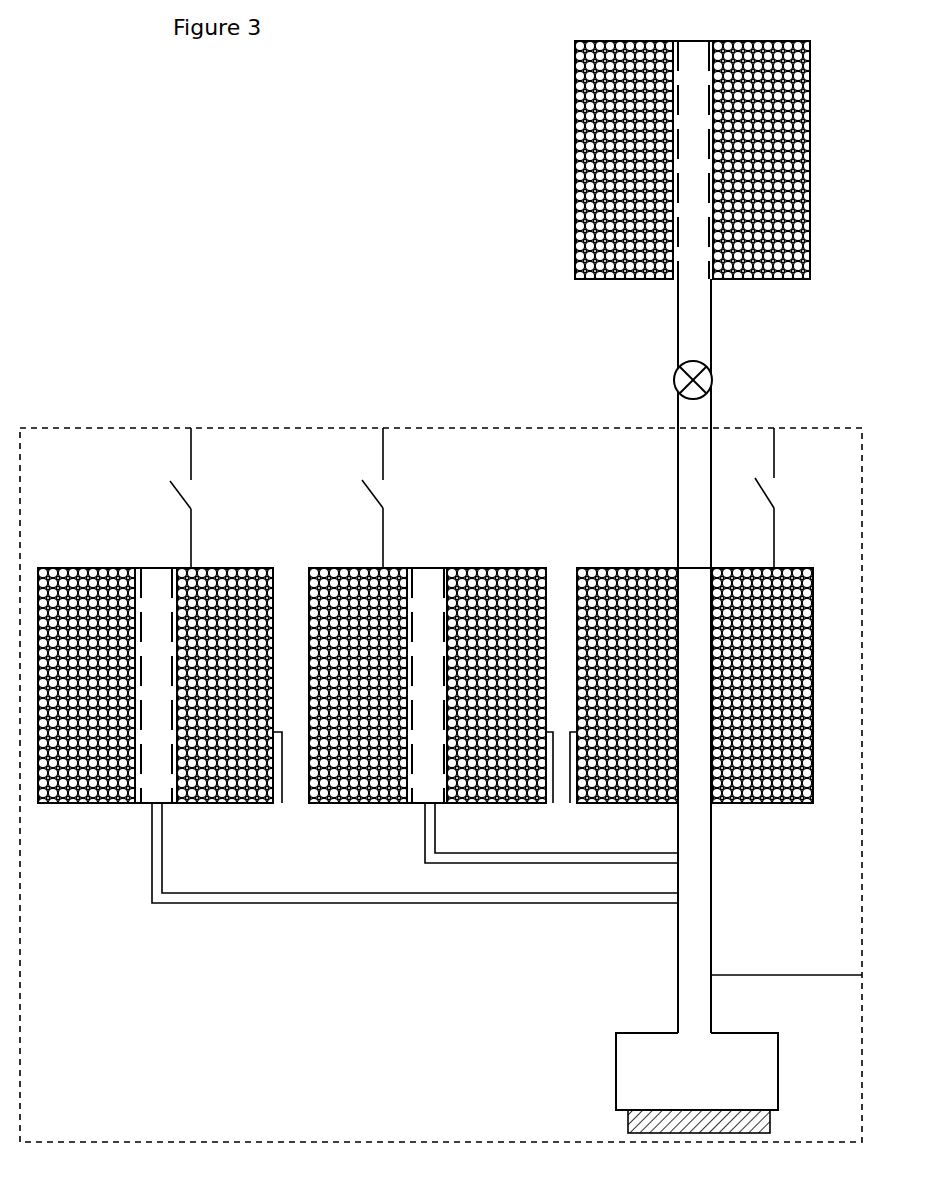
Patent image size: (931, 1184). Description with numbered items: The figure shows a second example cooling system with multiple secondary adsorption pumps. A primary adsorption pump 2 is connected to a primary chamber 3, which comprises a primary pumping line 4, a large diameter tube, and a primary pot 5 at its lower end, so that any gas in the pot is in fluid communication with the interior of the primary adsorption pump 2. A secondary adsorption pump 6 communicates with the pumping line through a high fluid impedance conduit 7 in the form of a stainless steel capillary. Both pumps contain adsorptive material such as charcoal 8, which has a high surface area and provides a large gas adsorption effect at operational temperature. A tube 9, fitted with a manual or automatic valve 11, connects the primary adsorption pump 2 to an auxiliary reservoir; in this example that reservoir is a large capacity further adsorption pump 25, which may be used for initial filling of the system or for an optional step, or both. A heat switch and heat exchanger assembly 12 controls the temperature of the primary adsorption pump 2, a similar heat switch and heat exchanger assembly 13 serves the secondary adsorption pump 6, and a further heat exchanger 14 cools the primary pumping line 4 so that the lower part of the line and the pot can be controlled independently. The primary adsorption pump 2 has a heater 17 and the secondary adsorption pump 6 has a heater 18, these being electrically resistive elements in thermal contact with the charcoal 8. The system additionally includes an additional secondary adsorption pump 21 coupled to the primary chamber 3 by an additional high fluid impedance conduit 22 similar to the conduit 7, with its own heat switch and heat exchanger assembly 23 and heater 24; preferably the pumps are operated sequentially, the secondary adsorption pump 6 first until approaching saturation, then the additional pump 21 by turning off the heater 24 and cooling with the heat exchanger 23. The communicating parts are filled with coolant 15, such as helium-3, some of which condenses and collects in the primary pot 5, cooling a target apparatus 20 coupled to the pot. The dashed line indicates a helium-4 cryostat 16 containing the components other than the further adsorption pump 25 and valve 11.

The primary adsorption pump 2 is at (586, 561).
The primary chamber 3 is at (676, 1015).
The primary pumping line 4 is at (676, 958).
The primary pot 5 is at (614, 1078).
The secondary adsorption pump 6 is at (404, 562).
The high fluid impedance conduit 7 is at (423, 849).
The charcoal 8 is at (488, 576).
The tube 9 is at (713, 411).
The valve 11 is at (673, 380).
The heat switch and heat exchanger assembly 12 is at (789, 500).
The heat switch and heat exchanger assembly 13 is at (352, 480).
The heat exchanger 14 is at (761, 972).
The coolant 15 is at (731, 1078).
The cryostat 16 is at (22, 1025).
The heater 17 is at (574, 806).
The heater 18 is at (549, 806).
The target apparatus 20 is at (626, 1122).
The additional secondary adsorption pump 21 is at (122, 565).
The additional high fluid impedance conduit 22 is at (252, 906).
The additional heat switch and heat exchanger assembly 23 is at (204, 493).
The heater 24 is at (279, 807).
The further adsorption pump 25 is at (573, 125).